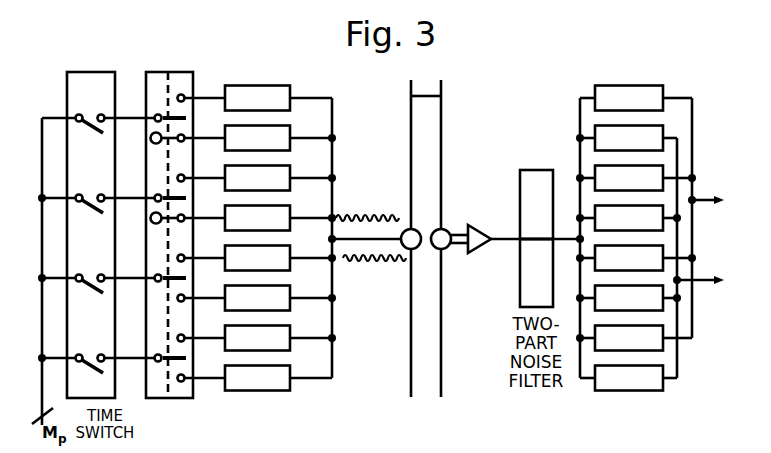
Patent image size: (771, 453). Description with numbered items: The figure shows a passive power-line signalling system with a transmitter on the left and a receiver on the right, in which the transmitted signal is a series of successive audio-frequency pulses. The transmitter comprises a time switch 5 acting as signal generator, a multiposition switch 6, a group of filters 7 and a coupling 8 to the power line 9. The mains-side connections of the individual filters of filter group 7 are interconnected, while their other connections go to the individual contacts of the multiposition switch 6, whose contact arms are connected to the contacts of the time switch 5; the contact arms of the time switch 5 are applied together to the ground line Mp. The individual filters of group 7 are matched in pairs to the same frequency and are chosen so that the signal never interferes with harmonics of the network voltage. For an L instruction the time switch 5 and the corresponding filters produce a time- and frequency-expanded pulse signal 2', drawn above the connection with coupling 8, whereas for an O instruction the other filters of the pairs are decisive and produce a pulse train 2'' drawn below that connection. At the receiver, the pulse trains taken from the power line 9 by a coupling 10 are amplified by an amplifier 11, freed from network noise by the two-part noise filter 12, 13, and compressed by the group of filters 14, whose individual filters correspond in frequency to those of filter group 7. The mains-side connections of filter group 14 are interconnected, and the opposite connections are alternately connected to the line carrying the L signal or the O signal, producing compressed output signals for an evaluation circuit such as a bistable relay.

The time switch 5 is at (95, 72).
The multiposition switch 6 is at (168, 72).
The group of filters 7 is at (248, 61).
The coupling 8 is at (417, 228).
The power line 9 is at (411, 121).
The coupling 10 is at (448, 228).
The amplifier 11 is at (477, 227).
The noise filter 12 is at (523, 275).
The noise filter 13 is at (532, 186).
The group of filters 14 is at (612, 68).
The pulse signal 2' is at (368, 193).
The pulse train 2'' is at (374, 280).